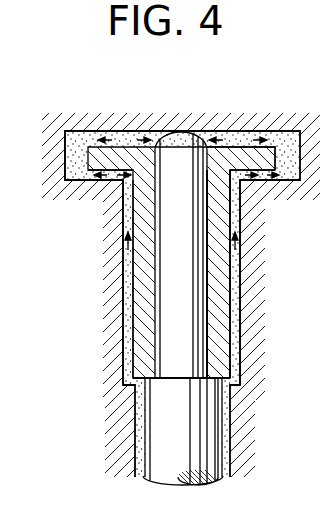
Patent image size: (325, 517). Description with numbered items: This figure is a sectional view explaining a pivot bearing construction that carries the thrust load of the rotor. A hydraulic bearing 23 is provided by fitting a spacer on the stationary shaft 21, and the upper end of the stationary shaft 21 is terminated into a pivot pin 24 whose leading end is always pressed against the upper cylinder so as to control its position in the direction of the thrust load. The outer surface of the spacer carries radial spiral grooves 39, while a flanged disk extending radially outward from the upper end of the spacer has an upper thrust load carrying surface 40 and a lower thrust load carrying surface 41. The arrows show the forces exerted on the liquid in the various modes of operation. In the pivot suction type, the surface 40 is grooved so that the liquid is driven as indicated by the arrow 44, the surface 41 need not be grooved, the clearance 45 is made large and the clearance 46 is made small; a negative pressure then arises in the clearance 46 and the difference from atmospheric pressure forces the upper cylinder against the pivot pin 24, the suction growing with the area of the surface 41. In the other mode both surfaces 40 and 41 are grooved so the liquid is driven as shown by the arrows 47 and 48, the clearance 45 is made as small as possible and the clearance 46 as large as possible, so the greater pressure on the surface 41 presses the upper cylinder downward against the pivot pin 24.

The stationary shaft 21 is at (210, 423).
The hydraulic bearing 23 is at (220, 338).
The pivot pin 24 is at (207, 131).
The radial spiral grooves 39 is at (237, 286).
The upper thrust load carrying surface 40 is at (97, 143).
The lower thrust load carrying surface 41 is at (242, 180).
The arrow 44 is at (117, 137).
The clearance 45 is at (82, 176).
The clearance 46 is at (253, 132).
The arrow 47 is at (141, 140).
The arrow 48 is at (120, 178).